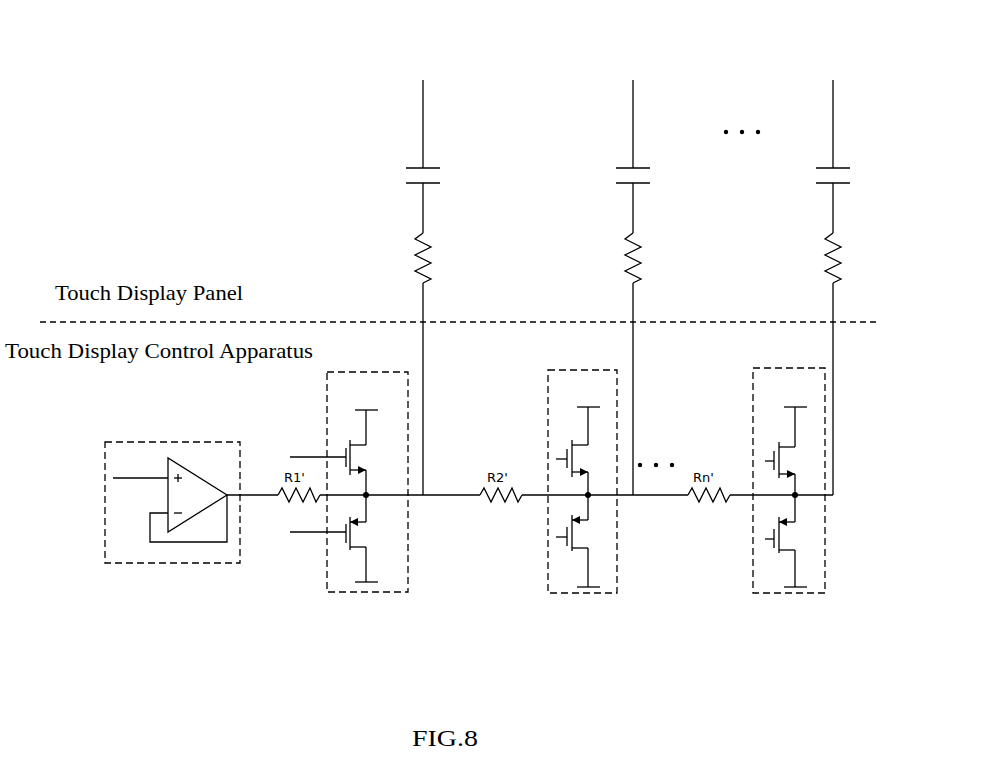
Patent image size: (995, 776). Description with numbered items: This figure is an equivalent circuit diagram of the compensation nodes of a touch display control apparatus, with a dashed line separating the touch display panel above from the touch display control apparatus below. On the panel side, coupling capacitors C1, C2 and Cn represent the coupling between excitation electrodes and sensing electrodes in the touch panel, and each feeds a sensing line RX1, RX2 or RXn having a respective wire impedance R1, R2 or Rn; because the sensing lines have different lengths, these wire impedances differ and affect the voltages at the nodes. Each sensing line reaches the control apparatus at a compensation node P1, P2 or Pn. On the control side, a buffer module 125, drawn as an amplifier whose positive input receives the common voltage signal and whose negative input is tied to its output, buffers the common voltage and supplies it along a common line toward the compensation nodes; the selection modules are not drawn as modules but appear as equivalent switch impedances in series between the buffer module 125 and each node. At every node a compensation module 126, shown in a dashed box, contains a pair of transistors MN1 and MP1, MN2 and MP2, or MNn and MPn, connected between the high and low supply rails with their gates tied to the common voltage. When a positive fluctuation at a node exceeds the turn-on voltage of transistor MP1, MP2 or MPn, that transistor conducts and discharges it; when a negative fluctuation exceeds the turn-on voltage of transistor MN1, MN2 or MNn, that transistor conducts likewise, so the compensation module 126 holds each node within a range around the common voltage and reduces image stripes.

The buffer module 125 is at (190, 458).
The compensation module 126 is at (534, 440).
The coupling capacitor C1 is at (436, 177).
The coupling capacitor C2 is at (645, 177).
The coupling capacitor Cn is at (846, 177).
The wire impedance R1 is at (437, 258).
The wire impedance R2 is at (648, 258).
The wire impedance Rn is at (848, 258).
The sensing line RX1 is at (440, 287).
The sensing line RX2 is at (650, 287).
The sensing line RXn is at (850, 287).
The transistor MN1 is at (344, 457).
The transistor MP1 is at (343, 533).
The compensation node P1 is at (375, 504).
The transistor MN2 is at (581, 458).
The transistor MP2 is at (580, 533).
The compensation node P2 is at (597, 504).
The transistor MNn is at (789, 460).
The transistor MPn is at (788, 535).
The compensation node Pn is at (803, 504).